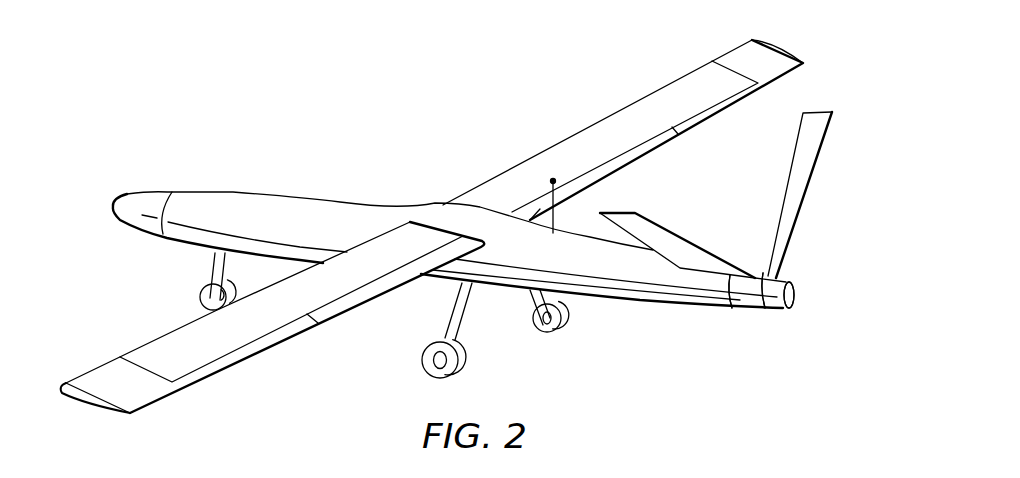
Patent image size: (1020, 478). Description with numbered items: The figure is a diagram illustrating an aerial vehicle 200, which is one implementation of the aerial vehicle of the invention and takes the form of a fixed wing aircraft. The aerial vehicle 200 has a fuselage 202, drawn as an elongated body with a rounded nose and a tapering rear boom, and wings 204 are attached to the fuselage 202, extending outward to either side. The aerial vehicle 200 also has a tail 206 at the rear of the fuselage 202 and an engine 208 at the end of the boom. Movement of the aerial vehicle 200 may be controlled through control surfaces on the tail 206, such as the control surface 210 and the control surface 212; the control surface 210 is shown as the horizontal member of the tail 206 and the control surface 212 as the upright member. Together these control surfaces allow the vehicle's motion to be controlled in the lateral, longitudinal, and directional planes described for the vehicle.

The aerial vehicle 200 is at (476, 226).
The fuselage 202 is at (353, 212).
The wings 204 is at (592, 138).
The tail 206 is at (745, 236).
The engine 208 is at (763, 302).
The control surface 210 is at (667, 247).
The control surface 212 is at (803, 167).